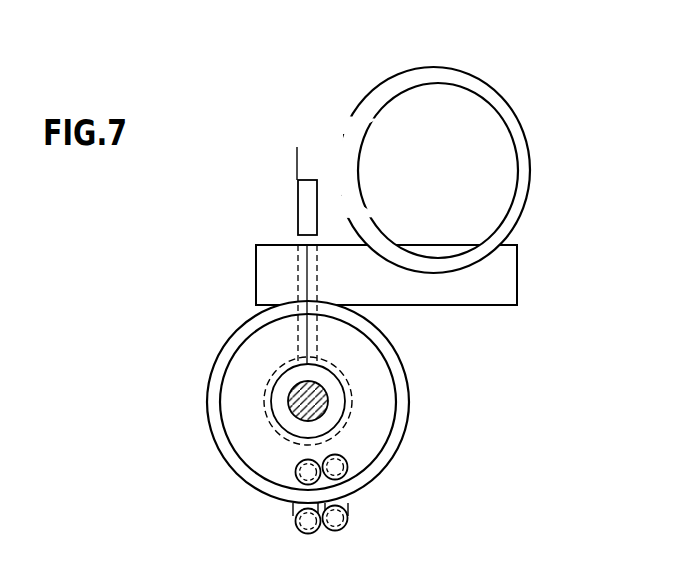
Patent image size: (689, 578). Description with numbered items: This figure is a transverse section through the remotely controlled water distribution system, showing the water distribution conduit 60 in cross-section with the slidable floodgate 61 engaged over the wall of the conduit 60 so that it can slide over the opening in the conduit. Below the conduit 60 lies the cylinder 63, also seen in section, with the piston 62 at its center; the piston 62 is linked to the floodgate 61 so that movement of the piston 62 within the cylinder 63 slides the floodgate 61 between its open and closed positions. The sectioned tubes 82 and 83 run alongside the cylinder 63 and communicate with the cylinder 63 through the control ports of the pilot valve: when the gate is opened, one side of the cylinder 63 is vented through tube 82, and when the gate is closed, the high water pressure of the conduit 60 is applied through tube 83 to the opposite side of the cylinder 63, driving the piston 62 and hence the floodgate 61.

The water distribution conduit 60 is at (493, 97).
The floodgate 61 is at (367, 167).
The piston 62 is at (337, 392).
The cylinder 63 is at (232, 333).
The tube 82 is at (348, 520).
The tube 83 is at (295, 523).